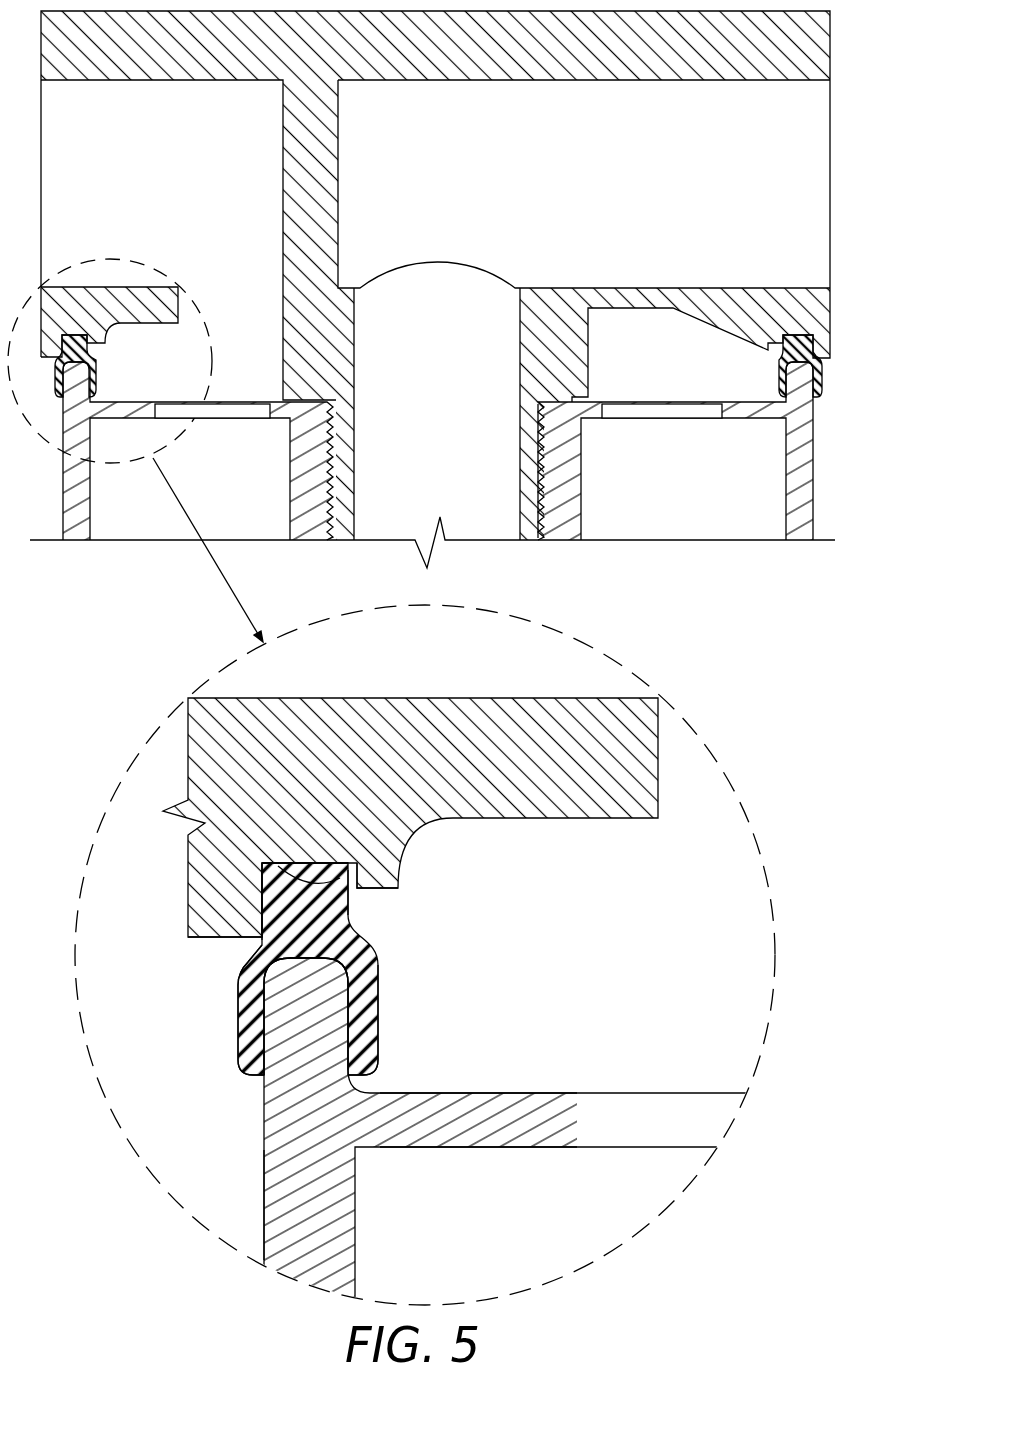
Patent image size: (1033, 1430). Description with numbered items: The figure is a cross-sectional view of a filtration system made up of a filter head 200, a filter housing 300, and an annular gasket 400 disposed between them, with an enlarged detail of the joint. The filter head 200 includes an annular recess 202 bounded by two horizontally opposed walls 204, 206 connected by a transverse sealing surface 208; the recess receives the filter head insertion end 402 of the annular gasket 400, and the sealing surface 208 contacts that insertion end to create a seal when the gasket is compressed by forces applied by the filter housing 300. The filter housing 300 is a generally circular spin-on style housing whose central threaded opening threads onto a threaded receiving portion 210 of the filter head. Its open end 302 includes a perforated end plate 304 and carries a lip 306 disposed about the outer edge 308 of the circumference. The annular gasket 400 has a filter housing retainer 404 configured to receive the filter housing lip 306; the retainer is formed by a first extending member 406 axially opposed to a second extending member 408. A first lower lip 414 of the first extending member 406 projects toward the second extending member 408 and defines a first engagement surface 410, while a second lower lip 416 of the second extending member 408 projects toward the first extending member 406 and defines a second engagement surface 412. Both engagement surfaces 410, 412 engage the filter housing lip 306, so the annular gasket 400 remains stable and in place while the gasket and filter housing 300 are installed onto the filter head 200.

The filter head 200 is at (832, 322).
The annular recess 202 is at (276, 858).
The horizontally opposed wall 204 is at (363, 877).
The horizontally opposed wall 206 is at (256, 879).
The transverse sealing surface 208 is at (282, 870).
The threaded receiving portion 210 is at (551, 487).
The filter housing 300 is at (816, 424).
The open end 302 is at (525, 1090).
The perforated end plate 304 is at (488, 1130).
The lip 306 is at (308, 1083).
The outer edge 308 is at (315, 1130).
The annular gasket 400 is at (214, 1034).
The filter head insertion end 402 is at (289, 902).
The filter housing retainer 404 is at (264, 982).
The first extending member 406 is at (237, 1023).
The second extending member 408 is at (358, 1030).
The first engagement surface 410 is at (273, 1066).
The second engagement surface 412 is at (346, 1061).
The first lower lip 414 is at (254, 1063).
The second lower lip 416 is at (349, 1060).